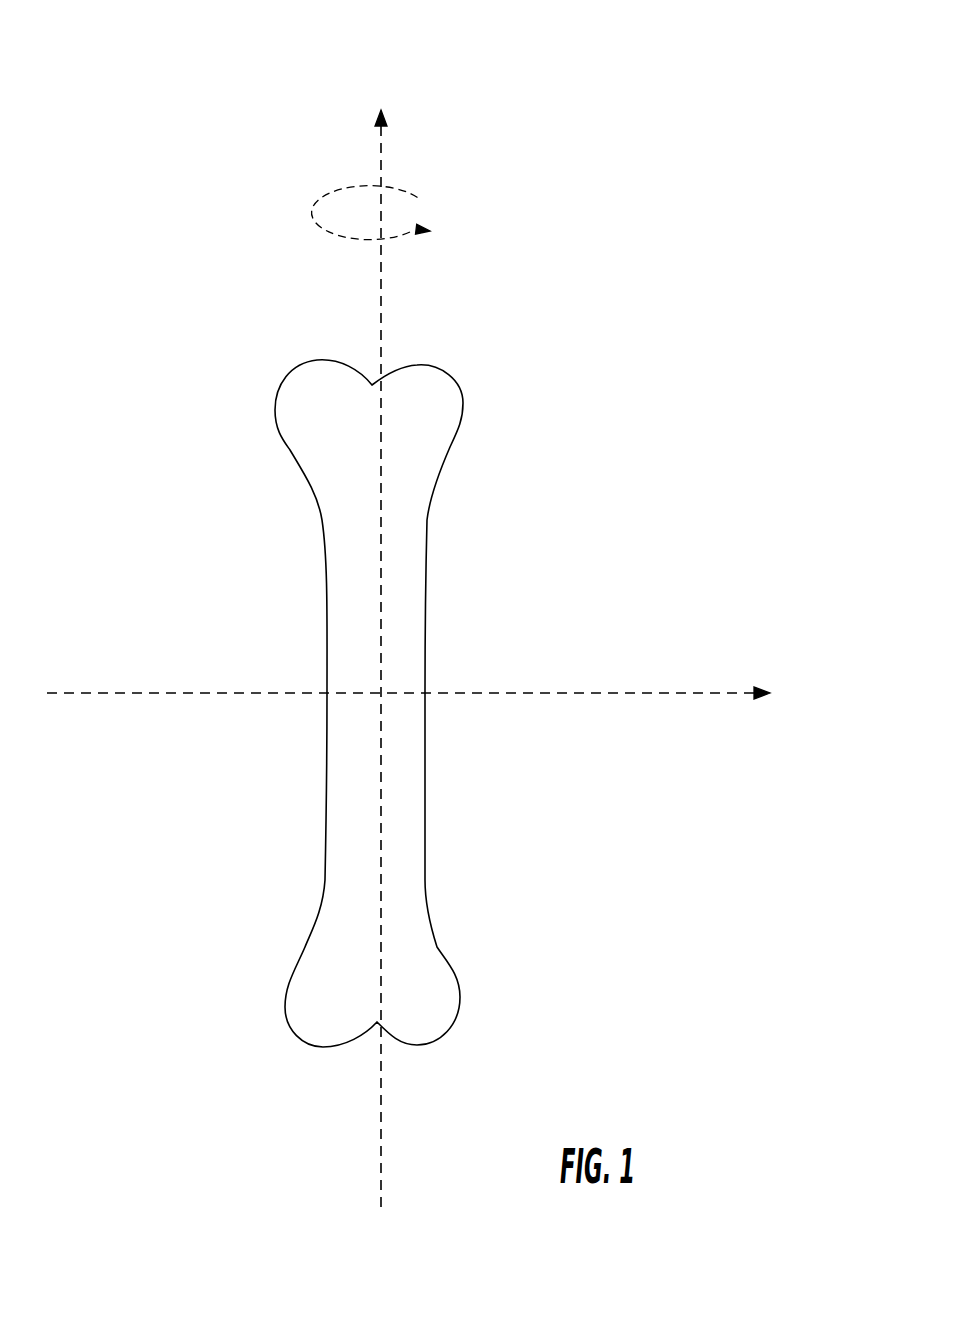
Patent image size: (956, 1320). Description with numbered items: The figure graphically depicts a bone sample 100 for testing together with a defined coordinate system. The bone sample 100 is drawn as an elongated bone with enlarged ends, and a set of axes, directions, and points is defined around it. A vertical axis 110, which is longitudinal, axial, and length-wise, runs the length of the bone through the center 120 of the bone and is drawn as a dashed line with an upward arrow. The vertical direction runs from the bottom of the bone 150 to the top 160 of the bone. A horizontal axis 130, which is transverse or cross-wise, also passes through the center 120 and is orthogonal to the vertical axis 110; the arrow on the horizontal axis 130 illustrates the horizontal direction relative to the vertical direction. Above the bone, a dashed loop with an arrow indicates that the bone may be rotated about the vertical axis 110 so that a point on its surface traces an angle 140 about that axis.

The bone sample 100 is at (420, 423).
The vertical axis 110 is at (403, 90).
The center of the bone 120 is at (377, 685).
The horizontal axis 130 is at (775, 673).
The angle 140 is at (447, 223).
The bottom of the bone 150 is at (367, 1060).
The top of the bone 160 is at (370, 338).